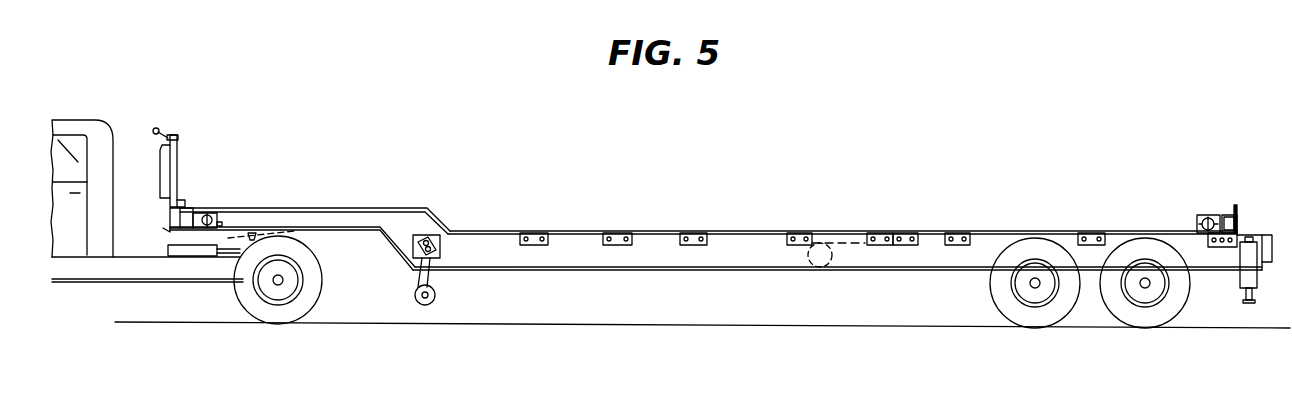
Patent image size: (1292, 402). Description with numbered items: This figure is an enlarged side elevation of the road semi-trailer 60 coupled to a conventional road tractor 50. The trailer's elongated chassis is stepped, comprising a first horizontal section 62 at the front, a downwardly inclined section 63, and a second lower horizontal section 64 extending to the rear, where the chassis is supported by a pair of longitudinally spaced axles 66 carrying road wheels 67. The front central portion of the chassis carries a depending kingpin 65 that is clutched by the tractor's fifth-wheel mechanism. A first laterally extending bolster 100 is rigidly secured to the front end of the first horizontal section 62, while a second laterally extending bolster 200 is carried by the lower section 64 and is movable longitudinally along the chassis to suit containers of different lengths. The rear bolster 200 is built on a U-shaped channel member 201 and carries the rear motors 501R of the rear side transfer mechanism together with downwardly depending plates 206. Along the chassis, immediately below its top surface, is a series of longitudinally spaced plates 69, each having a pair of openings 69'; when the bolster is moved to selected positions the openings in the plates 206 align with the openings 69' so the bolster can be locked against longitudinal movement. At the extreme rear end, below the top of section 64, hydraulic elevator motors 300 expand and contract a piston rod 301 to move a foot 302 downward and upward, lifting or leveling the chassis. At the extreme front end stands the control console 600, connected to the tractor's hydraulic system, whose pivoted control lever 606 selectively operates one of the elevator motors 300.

The road tractor 50 is at (73, 115).
The control console 600 is at (160, 173).
The control device 606 is at (158, 128).
The first laterally extending bolster 100 is at (190, 200).
The kingpin 65 is at (253, 232).
The road semi-trailer 60 is at (724, 258).
The first horizontal section 62 is at (330, 208).
The downwardly inclined section 63 is at (444, 216).
The second lower horizontal section 64 is at (752, 231).
The plates 69 is at (812, 220).
The openings 69' is at (580, 256).
The axles 66 is at (1143, 285).
The road wheels 67 is at (997, 292).
The second laterally extending bolster 200 is at (1225, 206).
The U-shaped channel member 201 is at (1240, 216).
The rear motors 501R is at (1196, 222).
The downwardly depending plates 206 is at (1217, 248).
The elevator motors 300 is at (1260, 286).
The piston rod 301 is at (1244, 292).
The foot 302 is at (1247, 302).